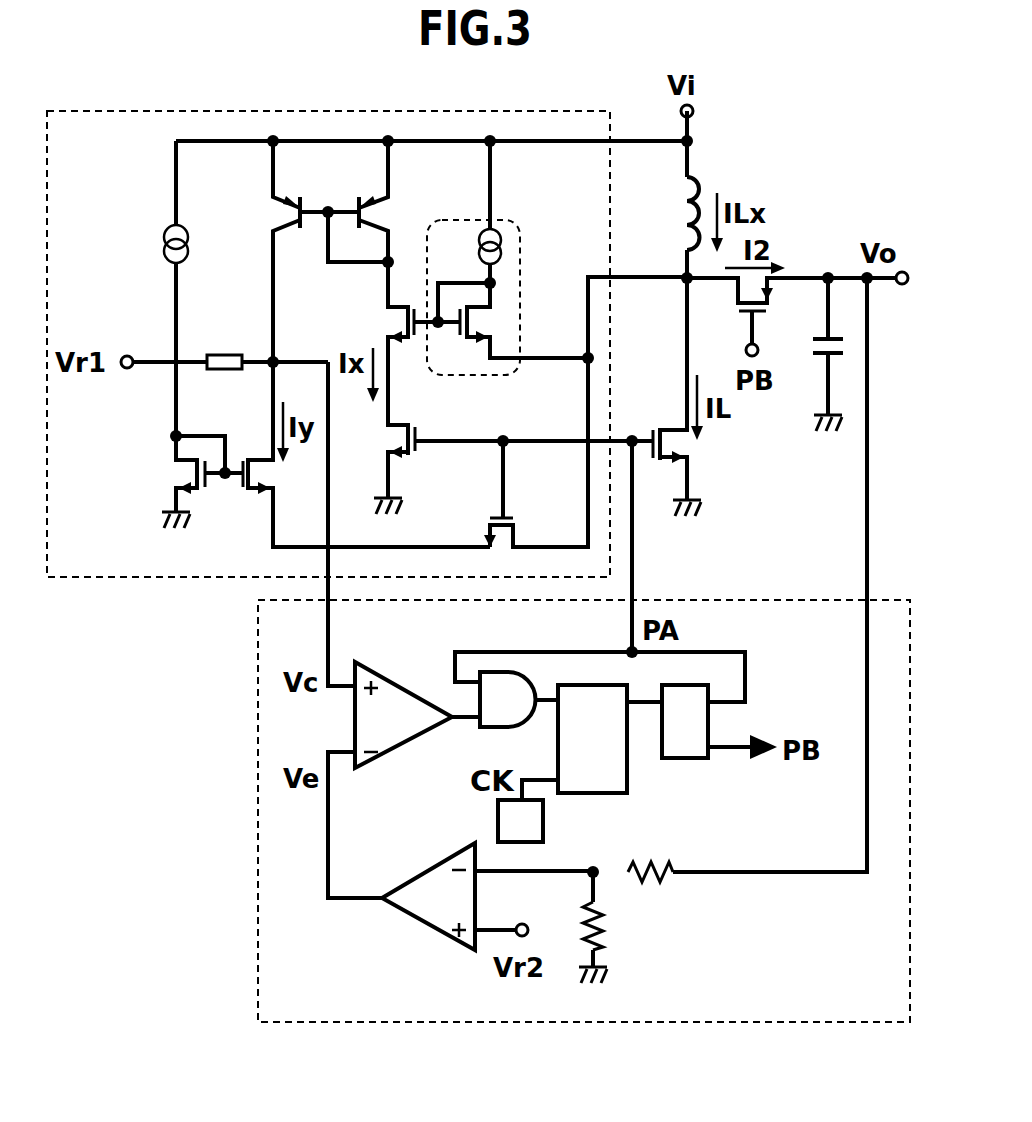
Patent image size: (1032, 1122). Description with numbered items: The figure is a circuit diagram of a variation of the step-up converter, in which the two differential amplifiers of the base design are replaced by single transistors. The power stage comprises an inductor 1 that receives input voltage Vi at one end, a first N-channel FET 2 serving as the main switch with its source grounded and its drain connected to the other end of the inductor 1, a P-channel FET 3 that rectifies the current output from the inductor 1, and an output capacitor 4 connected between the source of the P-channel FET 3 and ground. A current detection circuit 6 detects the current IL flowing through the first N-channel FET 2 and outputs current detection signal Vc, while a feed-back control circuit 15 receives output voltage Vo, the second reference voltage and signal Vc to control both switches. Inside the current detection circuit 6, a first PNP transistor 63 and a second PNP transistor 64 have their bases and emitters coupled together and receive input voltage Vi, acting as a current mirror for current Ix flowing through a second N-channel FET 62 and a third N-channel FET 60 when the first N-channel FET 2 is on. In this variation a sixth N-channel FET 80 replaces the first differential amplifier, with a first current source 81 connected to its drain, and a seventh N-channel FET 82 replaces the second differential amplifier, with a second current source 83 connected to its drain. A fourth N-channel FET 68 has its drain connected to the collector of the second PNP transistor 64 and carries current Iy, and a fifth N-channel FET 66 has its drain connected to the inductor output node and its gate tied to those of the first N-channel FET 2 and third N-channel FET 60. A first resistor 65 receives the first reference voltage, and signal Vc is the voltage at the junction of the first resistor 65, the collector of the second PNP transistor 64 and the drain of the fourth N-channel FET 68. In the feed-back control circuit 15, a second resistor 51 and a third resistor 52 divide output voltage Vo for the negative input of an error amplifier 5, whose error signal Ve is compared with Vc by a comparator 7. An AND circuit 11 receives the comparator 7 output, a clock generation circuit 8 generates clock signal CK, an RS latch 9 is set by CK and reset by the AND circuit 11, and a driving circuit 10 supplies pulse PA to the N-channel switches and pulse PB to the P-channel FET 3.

The inductor 1 is at (700, 185).
The first N-channel FET 2 is at (672, 434).
The P-channel FET 3 is at (737, 292).
The output capacitor 4 is at (822, 355).
The error amplifier 5 is at (478, 896).
The current detection circuit 6 is at (112, 580).
The comparator 7 is at (380, 672).
The clock generation circuit 8 is at (545, 822).
The RS latch 9 is at (627, 775).
The driving circuit 10 is at (705, 760).
The AND circuit 11 is at (470, 725).
The feed-back control circuit 15 is at (595, 1025).
The second resistor 51 is at (665, 880).
The third resistor 52 is at (600, 920).
The third N-channel FET 60 is at (420, 430).
The second N-channel FET 62 is at (394, 308).
The first PNP transistor 63 is at (386, 212).
The second PNP transistor 64 is at (286, 208).
The first resistor 65 is at (226, 352).
The fifth N-channel FET 66 is at (482, 535).
The fourth N-channel FET 68 is at (245, 492).
The sixth N-channel FET 80 is at (478, 306).
The first current source 81 is at (503, 238).
The seventh N-channel FET 82 is at (176, 455).
The second current source 83 is at (164, 237).